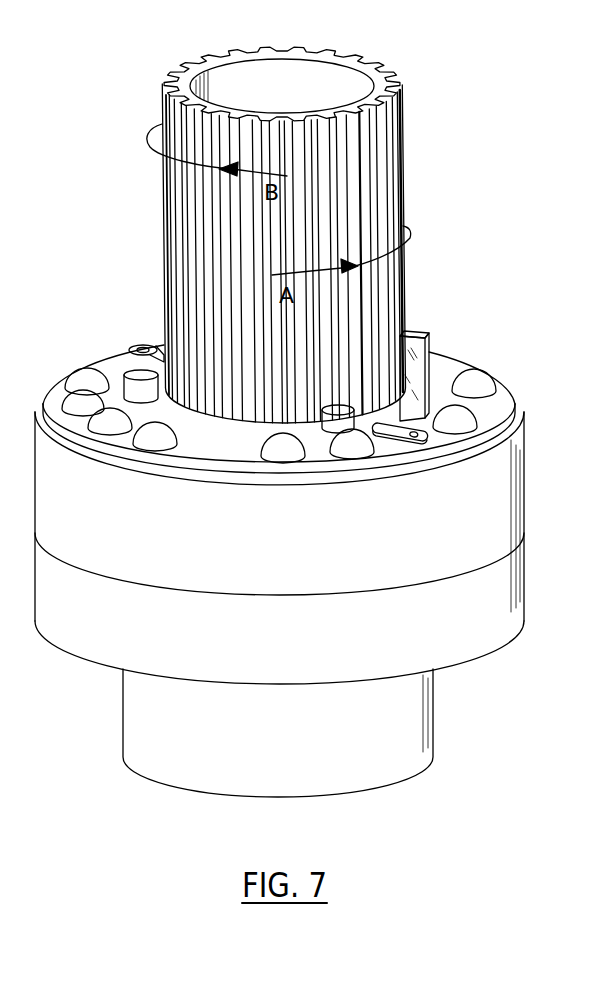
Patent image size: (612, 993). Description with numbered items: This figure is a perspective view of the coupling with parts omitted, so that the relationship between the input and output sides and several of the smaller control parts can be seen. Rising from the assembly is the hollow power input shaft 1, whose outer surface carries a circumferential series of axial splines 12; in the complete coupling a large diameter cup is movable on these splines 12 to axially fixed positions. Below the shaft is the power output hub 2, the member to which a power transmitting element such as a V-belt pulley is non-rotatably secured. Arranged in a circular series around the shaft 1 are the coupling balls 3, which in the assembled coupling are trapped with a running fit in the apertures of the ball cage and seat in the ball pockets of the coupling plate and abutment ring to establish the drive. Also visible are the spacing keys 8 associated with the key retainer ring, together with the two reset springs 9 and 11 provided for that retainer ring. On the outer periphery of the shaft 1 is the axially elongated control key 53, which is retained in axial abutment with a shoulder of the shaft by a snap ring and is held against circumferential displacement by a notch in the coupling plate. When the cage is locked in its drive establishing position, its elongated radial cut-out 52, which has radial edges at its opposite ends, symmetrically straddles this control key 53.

The hollow power input shaft 1 is at (259, 222).
The axial splines 12 is at (330, 50).
The power output hub 2 is at (430, 713).
The coupling balls 3 is at (72, 403).
The spacing keys 8 is at (138, 372).
The reset spring 9 is at (428, 437).
The reset spring 11 is at (143, 346).
The radial cut-out 52 is at (429, 392).
The control key 53 is at (415, 331).